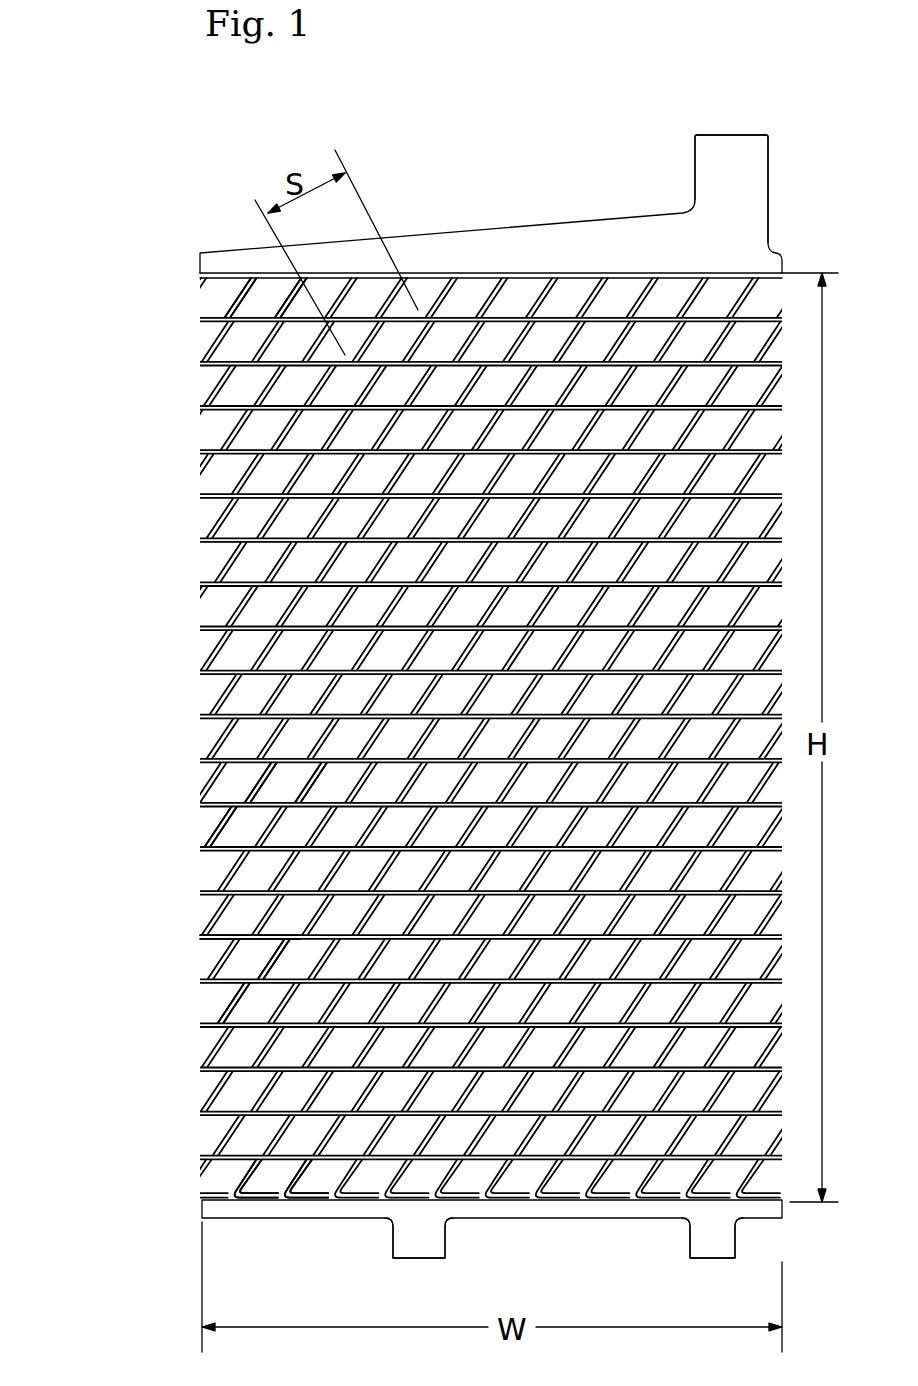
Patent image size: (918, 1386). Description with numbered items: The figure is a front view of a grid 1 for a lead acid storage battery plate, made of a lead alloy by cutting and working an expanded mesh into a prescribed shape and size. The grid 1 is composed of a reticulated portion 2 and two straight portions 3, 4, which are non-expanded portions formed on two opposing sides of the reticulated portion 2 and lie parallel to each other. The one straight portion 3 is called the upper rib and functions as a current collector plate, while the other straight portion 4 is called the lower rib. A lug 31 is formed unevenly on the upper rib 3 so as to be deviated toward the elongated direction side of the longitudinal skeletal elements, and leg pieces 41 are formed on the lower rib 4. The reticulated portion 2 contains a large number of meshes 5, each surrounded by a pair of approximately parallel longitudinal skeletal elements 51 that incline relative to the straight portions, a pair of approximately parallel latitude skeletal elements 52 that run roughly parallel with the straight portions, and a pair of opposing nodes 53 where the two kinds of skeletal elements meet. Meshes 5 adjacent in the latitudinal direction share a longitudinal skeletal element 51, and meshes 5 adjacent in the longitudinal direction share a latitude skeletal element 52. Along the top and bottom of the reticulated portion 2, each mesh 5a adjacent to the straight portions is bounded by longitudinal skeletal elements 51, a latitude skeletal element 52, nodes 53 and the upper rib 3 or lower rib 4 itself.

The grid 1 is at (135, 238).
The reticulated portion 2 is at (165, 658).
The straight portion 3 is at (546, 262).
The lug 31 is at (716, 162).
The straight portion 4 is at (337, 1212).
The leg pieces 41 is at (427, 1247).
The mesh 5 is at (285, 788).
The mesh adjacent to the straight portions 5a is at (255, 297).
The longitudinal skeletal element 51 is at (232, 1002).
The latitude skeletal element 52 is at (263, 937).
The node 53 is at (243, 818).